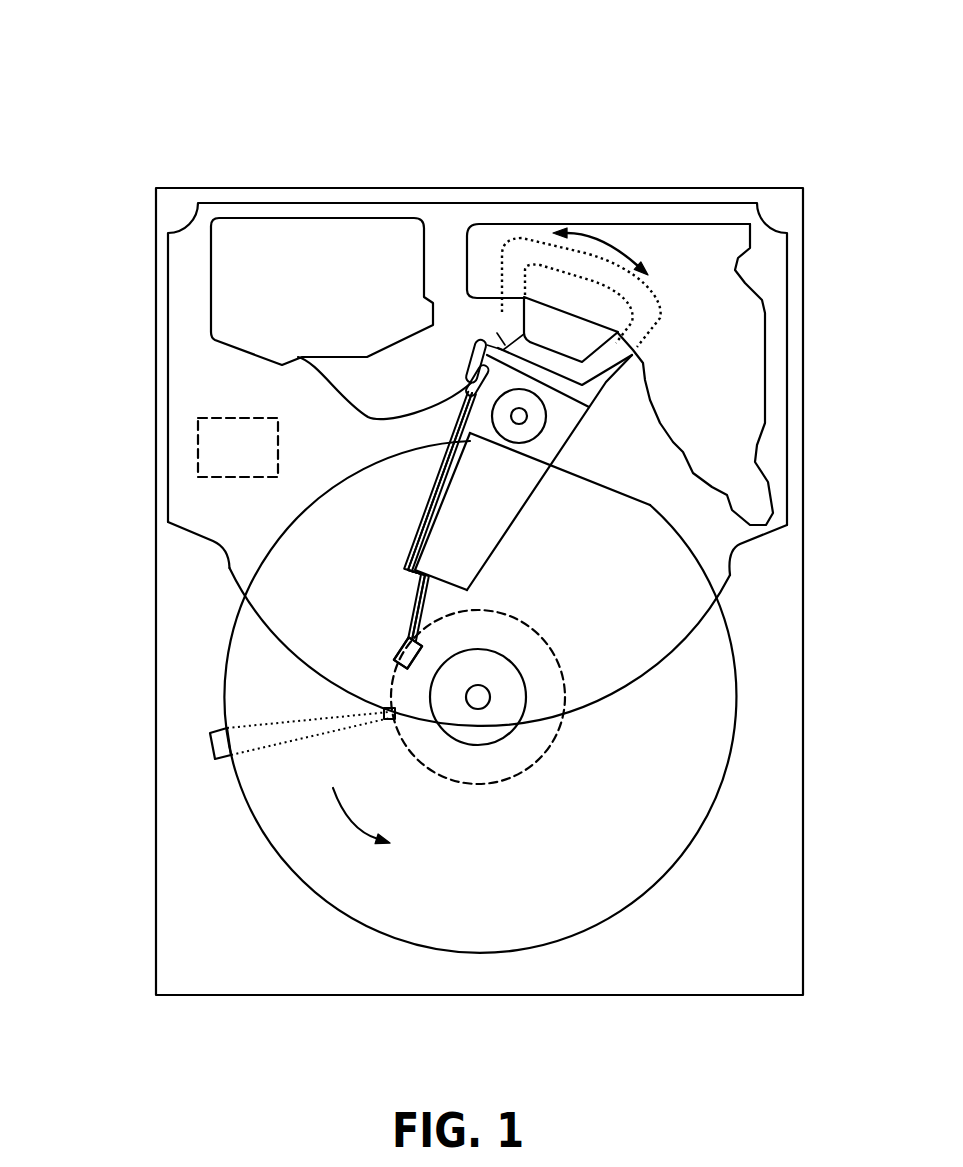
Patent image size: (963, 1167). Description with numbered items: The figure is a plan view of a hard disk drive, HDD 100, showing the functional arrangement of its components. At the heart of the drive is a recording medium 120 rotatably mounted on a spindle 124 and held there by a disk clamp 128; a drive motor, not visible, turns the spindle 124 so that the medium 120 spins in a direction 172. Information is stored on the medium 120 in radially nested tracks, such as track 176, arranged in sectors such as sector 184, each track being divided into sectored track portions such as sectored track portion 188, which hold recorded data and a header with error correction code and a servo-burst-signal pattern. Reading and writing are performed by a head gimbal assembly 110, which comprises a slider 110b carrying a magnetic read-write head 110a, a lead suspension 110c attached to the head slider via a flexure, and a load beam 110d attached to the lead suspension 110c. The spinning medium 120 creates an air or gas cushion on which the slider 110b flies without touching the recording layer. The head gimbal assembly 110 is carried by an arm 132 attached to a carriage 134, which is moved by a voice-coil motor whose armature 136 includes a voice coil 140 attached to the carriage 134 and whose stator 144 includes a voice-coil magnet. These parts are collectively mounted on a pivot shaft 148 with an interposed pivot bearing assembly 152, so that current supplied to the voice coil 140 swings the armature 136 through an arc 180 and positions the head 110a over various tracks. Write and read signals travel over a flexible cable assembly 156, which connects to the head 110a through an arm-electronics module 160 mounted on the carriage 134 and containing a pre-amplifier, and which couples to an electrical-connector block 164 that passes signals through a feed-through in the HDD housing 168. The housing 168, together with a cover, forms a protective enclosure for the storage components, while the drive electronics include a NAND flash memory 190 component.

The hard disk drive 100 is at (79, 61).
The head gimbal assembly 110 is at (87, 500).
The magnetic read-write head 110a is at (396, 661).
The slider 110b is at (400, 640).
The lead suspension 110c is at (410, 600).
The load beam 110d is at (433, 587).
The recording medium 120 is at (665, 645).
The spindle 124 is at (484, 697).
The disk clamp 128 is at (505, 713).
The arm 132 is at (470, 532).
The carriage 134 is at (538, 448).
The armature 136 is at (497, 333).
The voice coil 140 is at (515, 308).
The stator 144 is at (733, 317).
The pivot shaft 148 is at (522, 416).
The pivot bearing assembly 152 is at (533, 430).
The flexible cable assembly 156 is at (338, 392).
The arm-electronics module 160 is at (470, 380).
The electrical-connector block 164 is at (238, 292).
The HDD housing 168 is at (783, 203).
The direction 172 is at (386, 814).
The track 176 is at (553, 657).
The arc 180 is at (600, 243).
The sector 184 is at (212, 740).
The sectored track portion 188 is at (385, 710).
The NAND flash memory 190 is at (205, 443).